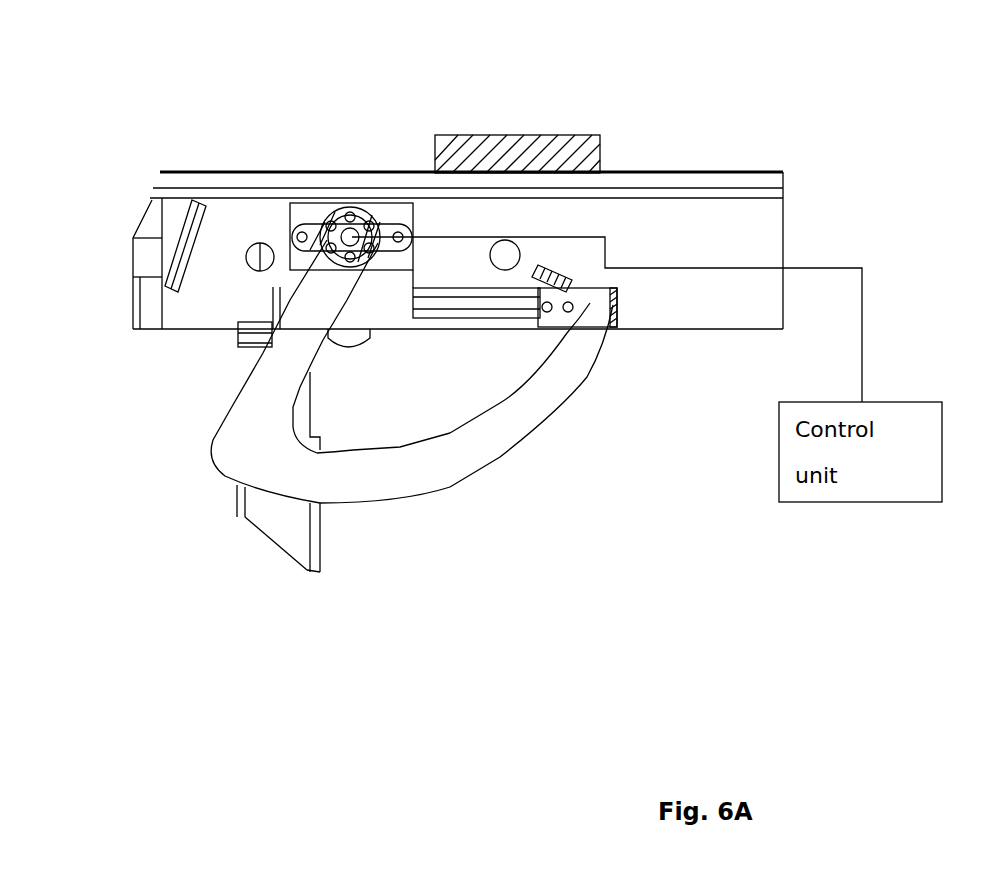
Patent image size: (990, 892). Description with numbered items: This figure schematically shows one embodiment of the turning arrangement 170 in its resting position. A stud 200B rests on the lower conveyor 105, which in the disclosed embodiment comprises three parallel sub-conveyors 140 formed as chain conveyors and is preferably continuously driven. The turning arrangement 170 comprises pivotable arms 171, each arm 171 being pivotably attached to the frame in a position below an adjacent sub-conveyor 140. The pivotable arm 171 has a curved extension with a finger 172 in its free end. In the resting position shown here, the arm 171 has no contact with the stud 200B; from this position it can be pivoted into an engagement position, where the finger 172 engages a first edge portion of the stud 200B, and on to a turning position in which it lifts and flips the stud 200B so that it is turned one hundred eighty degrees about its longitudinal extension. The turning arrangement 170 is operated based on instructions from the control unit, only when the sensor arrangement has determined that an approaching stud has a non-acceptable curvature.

The lower conveyor 105 is at (265, 172).
The sub-conveyor 140 is at (330, 170).
The stud 200B is at (583, 147).
The turning arrangement 170 is at (423, 468).
The pivotable arm 171 is at (503, 433).
The finger 172 is at (613, 323).